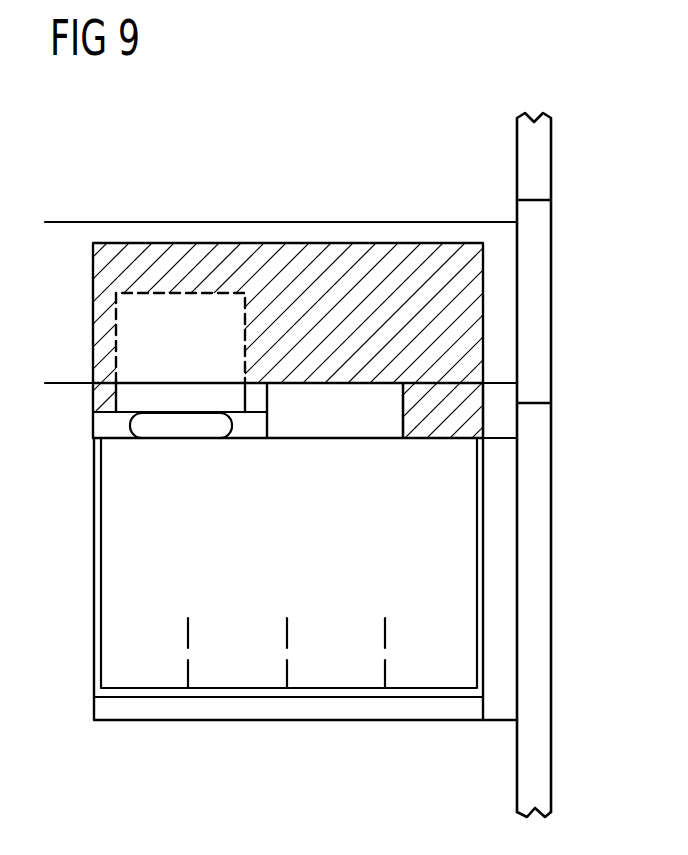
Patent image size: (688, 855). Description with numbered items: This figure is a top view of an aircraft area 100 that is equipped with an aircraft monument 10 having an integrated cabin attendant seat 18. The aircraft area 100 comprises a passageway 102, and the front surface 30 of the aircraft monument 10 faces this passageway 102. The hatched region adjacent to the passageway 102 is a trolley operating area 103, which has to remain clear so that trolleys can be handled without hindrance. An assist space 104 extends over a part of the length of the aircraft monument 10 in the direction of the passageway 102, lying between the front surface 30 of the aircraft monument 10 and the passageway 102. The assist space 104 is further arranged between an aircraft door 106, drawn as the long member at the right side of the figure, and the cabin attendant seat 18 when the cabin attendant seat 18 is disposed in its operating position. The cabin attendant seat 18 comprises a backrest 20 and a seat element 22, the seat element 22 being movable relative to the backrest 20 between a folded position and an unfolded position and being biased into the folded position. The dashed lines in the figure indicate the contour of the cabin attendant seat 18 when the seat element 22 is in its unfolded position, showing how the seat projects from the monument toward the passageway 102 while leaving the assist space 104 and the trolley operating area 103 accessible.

The aircraft area 100 is at (387, 114).
The passageway 102 is at (406, 223).
The trolley operating area 103 is at (348, 262).
The seat element 22 is at (193, 307).
The cabin attendant seat 18 is at (168, 400).
The backrest 20 is at (195, 430).
The assist space 104 is at (335, 427).
The front surface 30 is at (458, 432).
The aircraft monument 10 is at (440, 530).
The aircraft door 106 is at (538, 317).